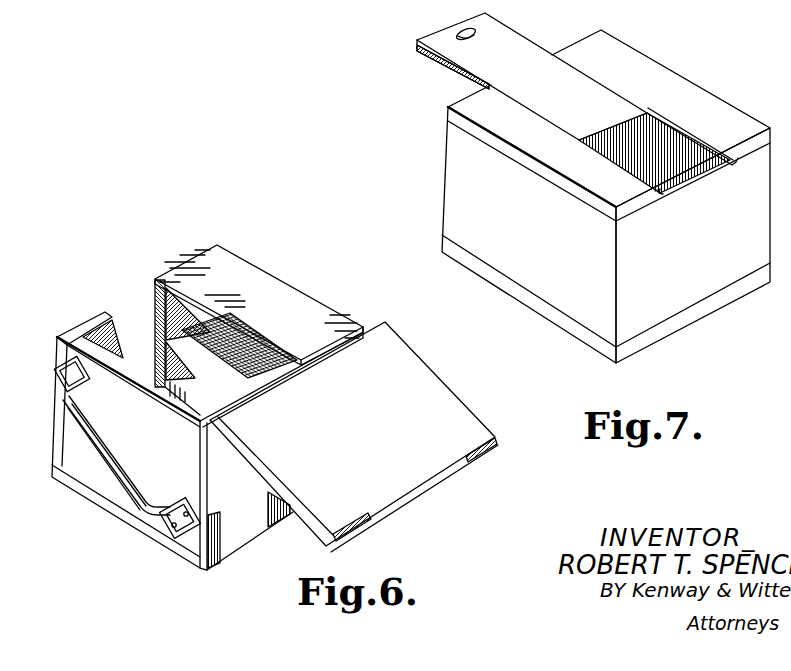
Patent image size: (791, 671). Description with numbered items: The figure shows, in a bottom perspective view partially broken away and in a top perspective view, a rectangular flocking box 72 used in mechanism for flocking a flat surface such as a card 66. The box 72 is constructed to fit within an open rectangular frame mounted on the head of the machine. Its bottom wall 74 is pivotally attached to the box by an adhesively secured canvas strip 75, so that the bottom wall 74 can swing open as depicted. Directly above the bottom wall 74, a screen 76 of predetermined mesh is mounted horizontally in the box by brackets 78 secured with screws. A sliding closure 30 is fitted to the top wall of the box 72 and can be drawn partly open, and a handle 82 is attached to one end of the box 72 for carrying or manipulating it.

In FIG. 7, the sliding lid 30 is at (477, 62).
In FIG. 7, the flocking box 72 is at (606, 196).
In FIG. 6, the flocking box 72 is at (80, 332).
In FIG. 6, the card 66 is at (233, 273).
In FIG. 6, the bottom wall 74 is at (352, 446).
In FIG. 6, the canvas strip 75 is at (248, 527).
In FIG. 6, the screen 76 is at (230, 362).
In FIG. 6, the brackets 78 is at (158, 340).
In FIG. 6, the handle 82 is at (108, 452).